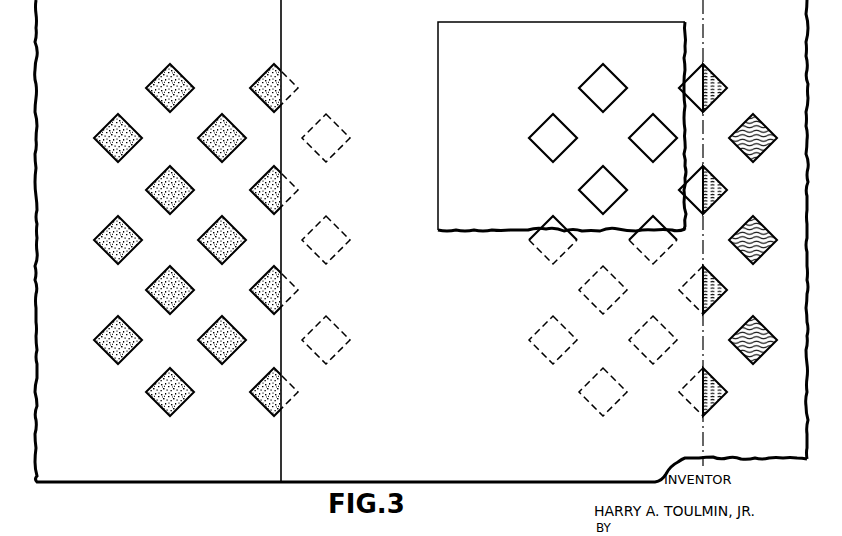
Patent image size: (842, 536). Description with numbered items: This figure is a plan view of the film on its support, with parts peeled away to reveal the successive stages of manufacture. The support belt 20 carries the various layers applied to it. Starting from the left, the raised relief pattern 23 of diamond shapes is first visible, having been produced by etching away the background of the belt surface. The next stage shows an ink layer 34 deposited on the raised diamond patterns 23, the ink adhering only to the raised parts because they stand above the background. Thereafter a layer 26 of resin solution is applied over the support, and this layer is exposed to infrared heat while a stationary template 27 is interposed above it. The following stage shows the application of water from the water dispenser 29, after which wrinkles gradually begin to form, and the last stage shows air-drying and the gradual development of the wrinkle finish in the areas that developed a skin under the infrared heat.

The endless support belt 20 is at (134, 473).
The relief pattern 23 is at (100, 234).
The resin solution layer 26 is at (295, 436).
The stationary template 27 is at (453, 88).
The water dispenser 29 is at (700, 52).
The ink layer 34 is at (108, 153).